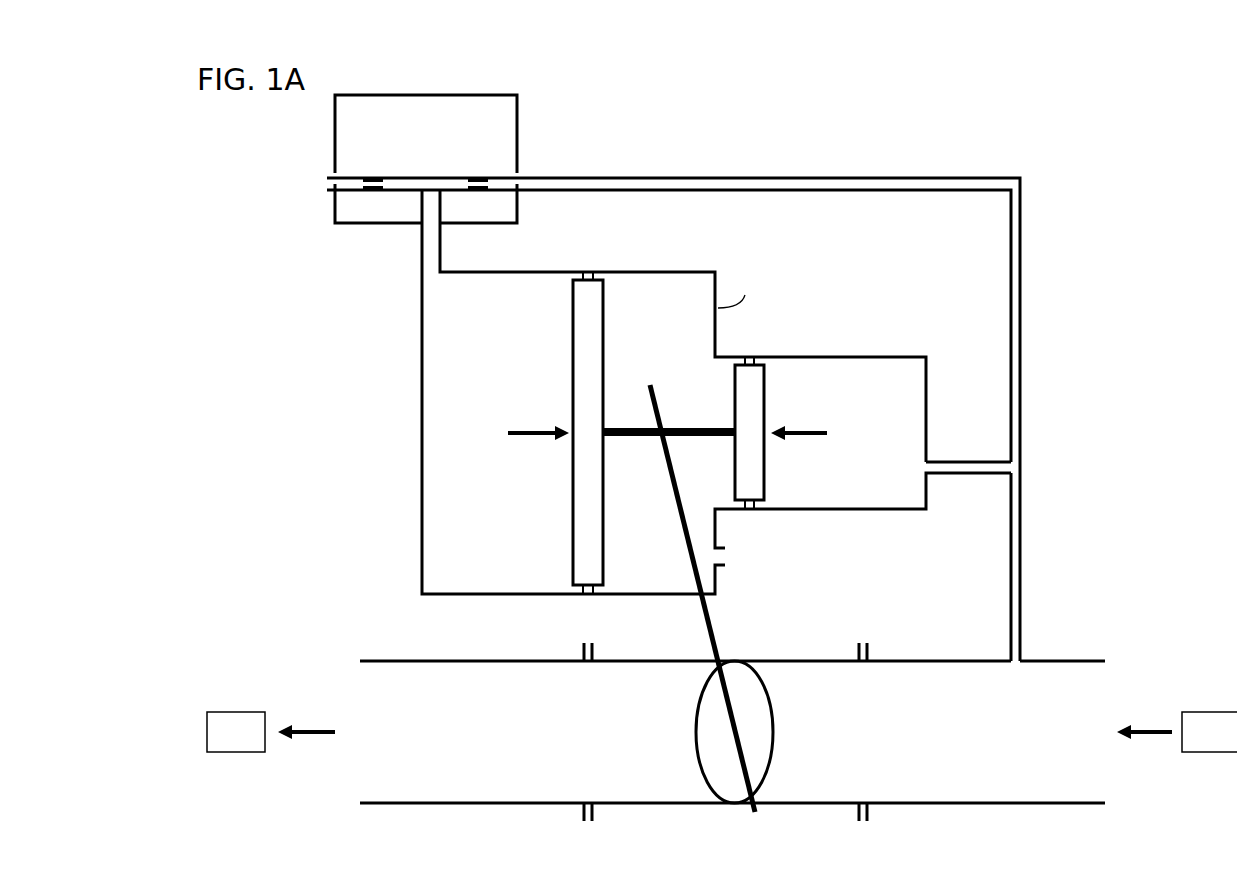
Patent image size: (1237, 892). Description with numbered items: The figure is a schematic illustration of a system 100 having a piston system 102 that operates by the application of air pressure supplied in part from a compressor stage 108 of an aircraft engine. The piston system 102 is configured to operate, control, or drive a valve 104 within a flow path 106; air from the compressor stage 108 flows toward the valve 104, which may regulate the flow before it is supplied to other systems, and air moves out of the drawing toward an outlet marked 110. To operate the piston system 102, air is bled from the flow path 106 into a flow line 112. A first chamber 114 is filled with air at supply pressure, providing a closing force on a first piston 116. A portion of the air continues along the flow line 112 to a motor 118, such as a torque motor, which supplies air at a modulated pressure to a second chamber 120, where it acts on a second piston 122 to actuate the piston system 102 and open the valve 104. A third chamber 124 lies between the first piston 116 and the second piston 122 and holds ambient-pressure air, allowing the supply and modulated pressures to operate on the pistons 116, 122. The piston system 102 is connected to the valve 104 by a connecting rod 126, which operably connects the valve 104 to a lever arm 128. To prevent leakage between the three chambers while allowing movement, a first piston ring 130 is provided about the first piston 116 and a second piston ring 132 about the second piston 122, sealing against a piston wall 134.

The system 100 is at (1057, 132).
The piston system 102 is at (385, 395).
The valve 104 is at (747, 682).
The flow path 106 is at (362, 660).
The compressor stage 108 is at (1177, 732).
The output 110 is at (271, 732).
The flow line 112 is at (1022, 565).
The first chamber 114 is at (858, 378).
The first piston 116 is at (758, 412).
The motor 118 is at (517, 157).
The second chamber 120 is at (497, 284).
The second piston 122 is at (573, 405).
The third chamber 124 is at (686, 287).
The connecting rod 126 is at (712, 625).
The lever arm 128 is at (643, 418).
The first piston ring 130 is at (753, 358).
The second piston ring 132 is at (588, 272).
The piston wall 134 is at (787, 512).